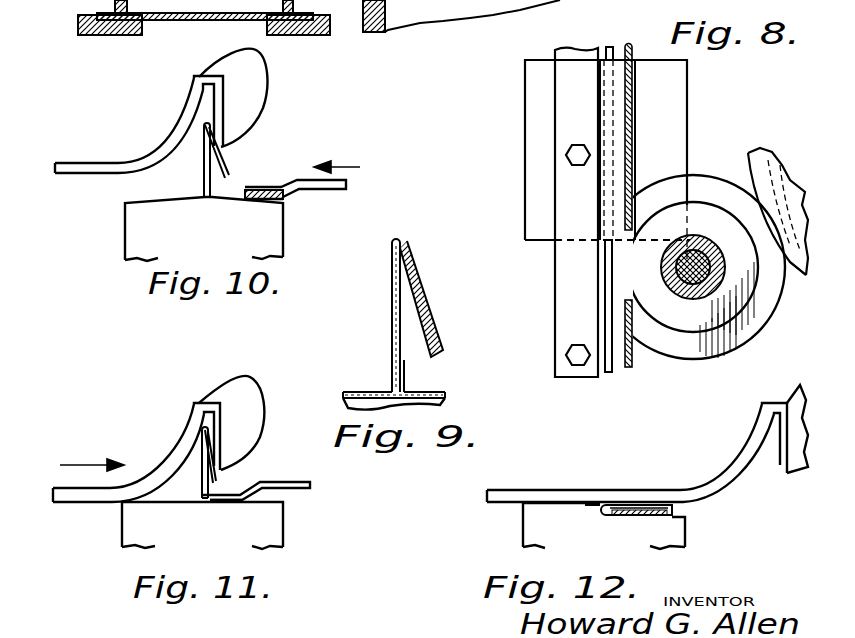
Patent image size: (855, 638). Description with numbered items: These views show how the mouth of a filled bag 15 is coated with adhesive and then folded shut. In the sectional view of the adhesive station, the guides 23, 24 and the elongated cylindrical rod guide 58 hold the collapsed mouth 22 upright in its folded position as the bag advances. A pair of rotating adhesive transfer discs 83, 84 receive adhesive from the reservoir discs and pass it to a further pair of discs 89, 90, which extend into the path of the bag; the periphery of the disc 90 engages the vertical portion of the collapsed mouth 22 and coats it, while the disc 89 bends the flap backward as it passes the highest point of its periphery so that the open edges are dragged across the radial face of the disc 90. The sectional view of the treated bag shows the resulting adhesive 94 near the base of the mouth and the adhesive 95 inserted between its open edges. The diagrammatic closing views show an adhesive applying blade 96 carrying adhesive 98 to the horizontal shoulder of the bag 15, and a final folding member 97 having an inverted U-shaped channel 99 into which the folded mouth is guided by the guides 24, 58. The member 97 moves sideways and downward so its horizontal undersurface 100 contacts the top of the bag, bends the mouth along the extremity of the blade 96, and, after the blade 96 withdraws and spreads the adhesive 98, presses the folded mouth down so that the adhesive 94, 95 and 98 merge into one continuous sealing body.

In FIG. 10, the bag 15 is at (125, 236).
In FIG. 9, the bag 15 is at (350, 392).
In FIG. 8, the bag 15 is at (674, 73).
In FIG. 11, the bag 15 is at (122, 525).
In FIG. 12, the bag 15 is at (523, 525).
In FIG. 10, the collapsed mouth 22 is at (239, 160).
In FIG. 9, the collapsed mouth 22 is at (392, 300).
In FIG. 8, the collapsed mouth 22 is at (628, 225).
In FIG. 11, the collapsed mouth 22 is at (202, 450).
In FIG. 12, the collapsed mouth 22 is at (618, 505).
In FIG. 8, the guide 23 is at (578, 378).
In FIG. 8, the guide 24 is at (606, 320).
In FIG. 8, the additional guide 58 is at (630, 172).
In FIG. 8, the adhesive transfer disc 83 is at (783, 286).
In FIG. 8, the adhesive transfer disc 84 is at (765, 152).
In FIG. 8, the adhesive transfer disc 89 is at (667, 322).
In FIG. 8, the adhesive transfer disc 90 is at (698, 356).
In FIG. 10, the adhesive 94 is at (230, 196).
In FIG. 9, the adhesive 94 is at (404, 390).
In FIG. 11, the adhesive 94 is at (206, 484).
In FIG. 12, the adhesive 94 is at (608, 512).
In FIG. 10, the adhesive 95 is at (227, 174).
In FIG. 9, the adhesive 95 is at (445, 350).
In FIG. 11, the adhesive 95 is at (212, 488).
In FIG. 10, the adhesive applying blade 96 is at (337, 186).
In FIG. 11, the adhesive applying blade 96 is at (311, 487).
In FIG. 10, the final folding member 97 is at (103, 164).
In FIG. 11, the final folding member 97 is at (128, 453).
In FIG. 12, the final folding member 97 is at (676, 487).
In FIG. 10, the adhesive 98 is at (282, 198).
In FIG. 11, the adhesive 98 is at (232, 500).
In FIG. 12, the adhesive 98 is at (632, 516).
In FIG. 10, the inverted U-shaped channel 99 is at (203, 88).
In FIG. 11, the inverted U-shaped channel 99 is at (203, 411).
In FIG. 12, the inverted U-shaped channel 99 is at (776, 412).
In FIG. 10, the horizontal undersurface 100 is at (77, 173).
In FIG. 12, the horizontal undersurface 100 is at (585, 505).